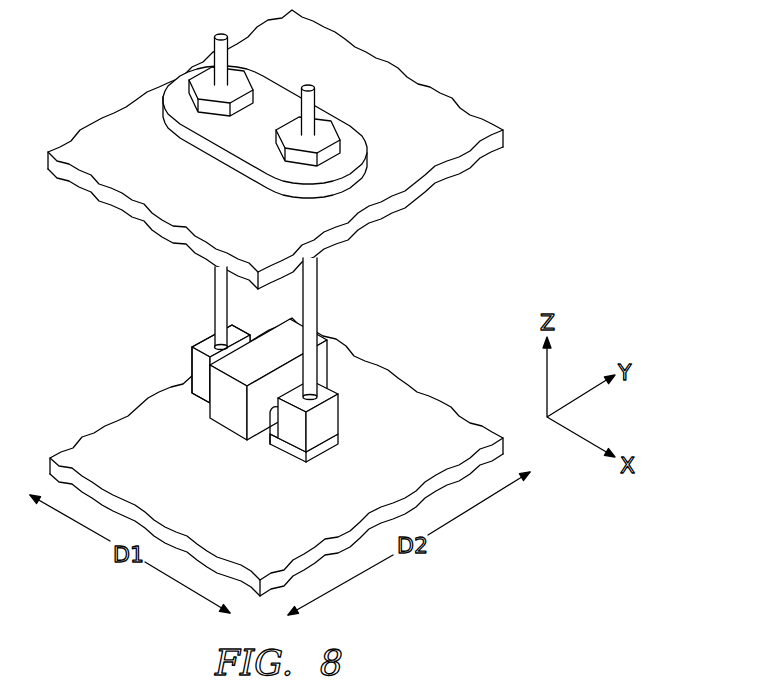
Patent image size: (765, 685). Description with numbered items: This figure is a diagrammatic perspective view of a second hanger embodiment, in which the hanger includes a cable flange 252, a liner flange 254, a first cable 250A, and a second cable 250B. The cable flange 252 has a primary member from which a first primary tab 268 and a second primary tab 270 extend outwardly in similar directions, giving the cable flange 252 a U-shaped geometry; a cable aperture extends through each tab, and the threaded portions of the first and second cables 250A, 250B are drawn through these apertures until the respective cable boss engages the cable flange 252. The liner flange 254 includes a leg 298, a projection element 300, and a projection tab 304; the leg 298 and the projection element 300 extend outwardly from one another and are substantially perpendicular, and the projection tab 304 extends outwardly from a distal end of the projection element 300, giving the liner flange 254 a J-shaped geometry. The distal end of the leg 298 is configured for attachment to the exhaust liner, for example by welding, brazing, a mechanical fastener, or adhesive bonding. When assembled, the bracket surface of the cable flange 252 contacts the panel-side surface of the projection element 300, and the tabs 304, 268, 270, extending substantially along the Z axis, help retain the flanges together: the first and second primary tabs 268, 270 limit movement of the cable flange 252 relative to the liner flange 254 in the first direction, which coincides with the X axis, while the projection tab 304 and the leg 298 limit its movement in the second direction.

The first cable 250A is at (345, 270).
The second cable 250B is at (205, 288).
The cable flange 252 is at (258, 468).
The liner flange 254 is at (350, 320).
The first primary tab 268 is at (328, 416).
The second primary tab 270 is at (200, 367).
The leg 298 is at (320, 450).
The projection element 300 is at (257, 403).
The projection tab 304 is at (224, 406).